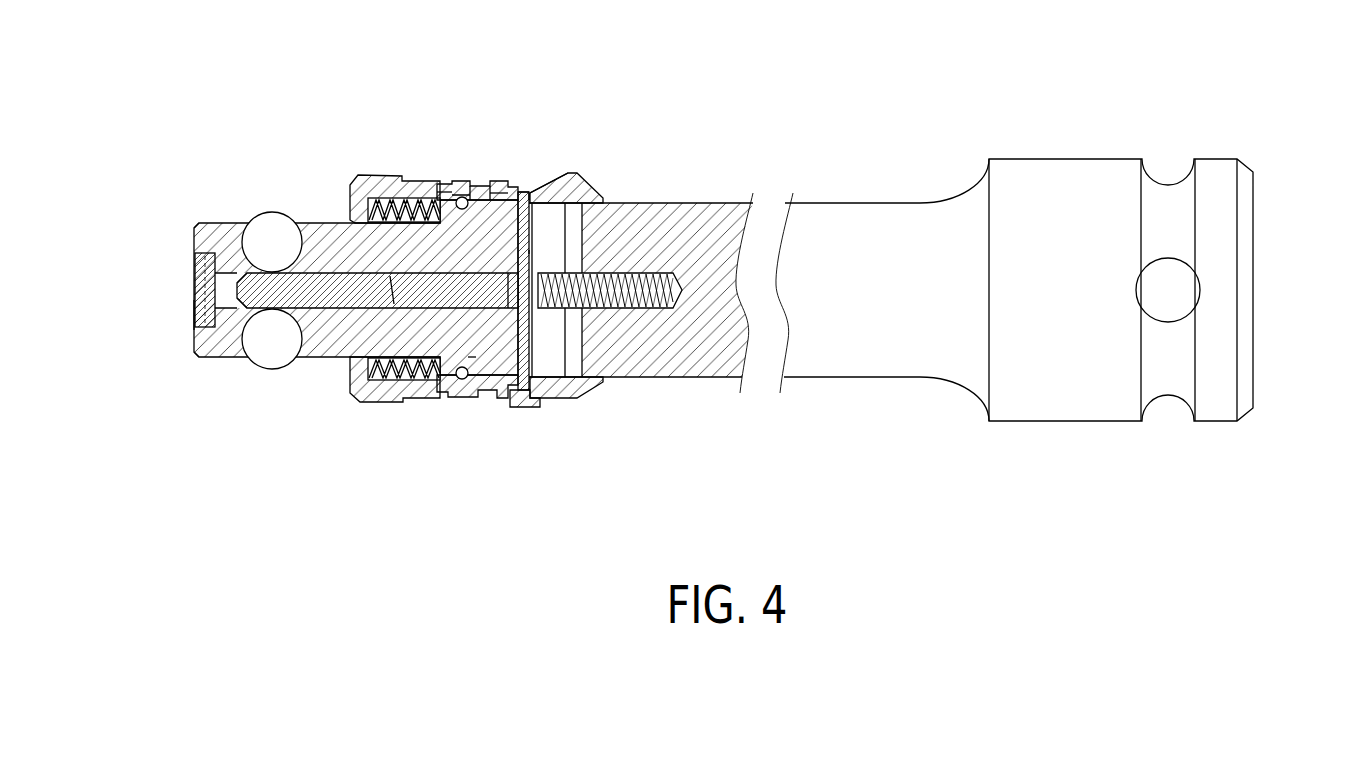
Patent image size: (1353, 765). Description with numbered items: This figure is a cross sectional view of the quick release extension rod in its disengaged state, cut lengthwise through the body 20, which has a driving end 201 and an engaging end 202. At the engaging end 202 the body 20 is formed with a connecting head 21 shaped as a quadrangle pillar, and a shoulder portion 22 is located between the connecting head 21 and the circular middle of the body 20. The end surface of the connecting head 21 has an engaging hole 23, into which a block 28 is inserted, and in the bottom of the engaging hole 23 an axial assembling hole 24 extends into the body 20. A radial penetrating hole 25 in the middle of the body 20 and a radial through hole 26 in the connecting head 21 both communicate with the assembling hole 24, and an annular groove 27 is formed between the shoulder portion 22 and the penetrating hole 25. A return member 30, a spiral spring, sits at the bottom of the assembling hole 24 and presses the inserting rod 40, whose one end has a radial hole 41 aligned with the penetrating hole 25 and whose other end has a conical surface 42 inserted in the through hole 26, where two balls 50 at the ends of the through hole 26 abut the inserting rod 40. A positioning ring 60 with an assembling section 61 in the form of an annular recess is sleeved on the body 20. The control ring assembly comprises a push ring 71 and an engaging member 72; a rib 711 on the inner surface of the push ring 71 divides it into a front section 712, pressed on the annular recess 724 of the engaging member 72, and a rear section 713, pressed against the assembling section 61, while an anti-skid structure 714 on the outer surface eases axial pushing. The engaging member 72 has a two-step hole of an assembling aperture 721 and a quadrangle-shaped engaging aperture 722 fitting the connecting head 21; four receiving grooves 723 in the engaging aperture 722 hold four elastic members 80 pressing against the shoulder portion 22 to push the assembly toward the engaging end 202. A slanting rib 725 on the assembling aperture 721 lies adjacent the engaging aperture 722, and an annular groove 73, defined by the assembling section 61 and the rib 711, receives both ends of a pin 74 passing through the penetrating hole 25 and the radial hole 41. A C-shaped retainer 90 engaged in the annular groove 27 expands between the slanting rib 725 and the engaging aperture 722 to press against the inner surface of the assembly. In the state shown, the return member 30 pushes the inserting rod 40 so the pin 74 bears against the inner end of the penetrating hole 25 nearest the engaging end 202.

The body 20 is at (736, 183).
The driving end 201 is at (1253, 195).
The engaging end 202 is at (194, 242).
The connecting head 21 is at (333, 342).
The shoulder portion 22 is at (427, 400).
The engaging hole 23 is at (192, 317).
The assembling hole 24 is at (392, 283).
The penetrating hole 25 is at (553, 353).
The through hole 26 is at (258, 348).
The annular groove 27 is at (472, 355).
The block 28 is at (200, 288).
The return member 30 is at (647, 328).
The inserting rod 40 is at (321, 308).
The radial hole 41 is at (527, 290).
The conical surface 42 is at (250, 285).
The balls 50 is at (253, 196).
The positioning ring 60 is at (600, 161).
The assembling section 61 is at (562, 195).
The push ring 71 is at (521, 161).
The rib 711 is at (500, 183).
The front section 712 is at (479, 186).
The rear section 713 is at (545, 187).
The anti-skid structure 714 is at (537, 190).
The engaging member 72 is at (344, 157).
The assembling aperture 721 is at (440, 187).
The engaging aperture 722 is at (348, 233).
The receiving grooves 723 is at (390, 198).
The annular recess 724 is at (438, 178).
The slanting rib 725 is at (468, 186).
The annular groove 73 is at (519, 408).
The pin 74 is at (529, 252).
The elastic members 80 is at (417, 398).
The C-shaped retainer 90 is at (469, 400).